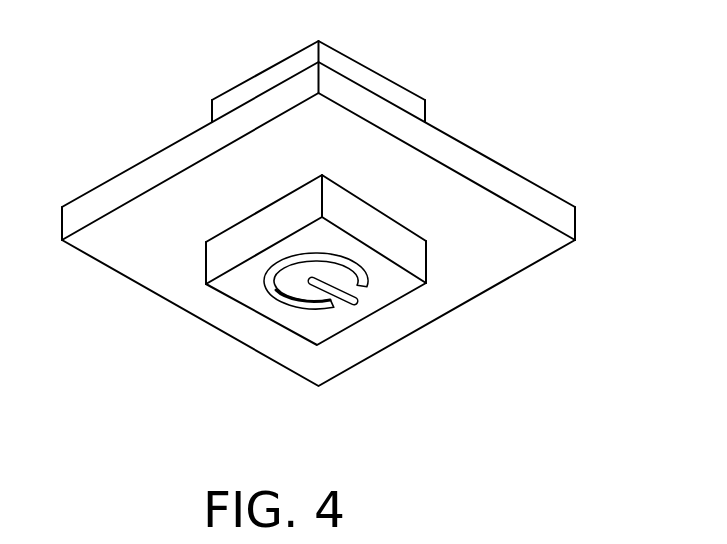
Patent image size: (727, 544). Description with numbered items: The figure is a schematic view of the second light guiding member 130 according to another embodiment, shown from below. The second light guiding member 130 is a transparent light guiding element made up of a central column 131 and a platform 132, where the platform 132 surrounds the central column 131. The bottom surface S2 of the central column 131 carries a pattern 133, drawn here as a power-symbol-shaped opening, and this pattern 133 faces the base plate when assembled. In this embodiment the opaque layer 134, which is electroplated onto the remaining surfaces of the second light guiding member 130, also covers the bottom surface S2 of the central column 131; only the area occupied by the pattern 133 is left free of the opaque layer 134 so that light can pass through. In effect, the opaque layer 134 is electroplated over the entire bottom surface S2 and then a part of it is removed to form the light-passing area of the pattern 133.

The second light guiding member 130 is at (598, 88).
The central column 131 is at (340, 52).
The platform 132 is at (146, 208).
The pattern 133 is at (362, 287).
The opaque layer 134 is at (158, 270).
The bottom surface S2 is at (260, 290).